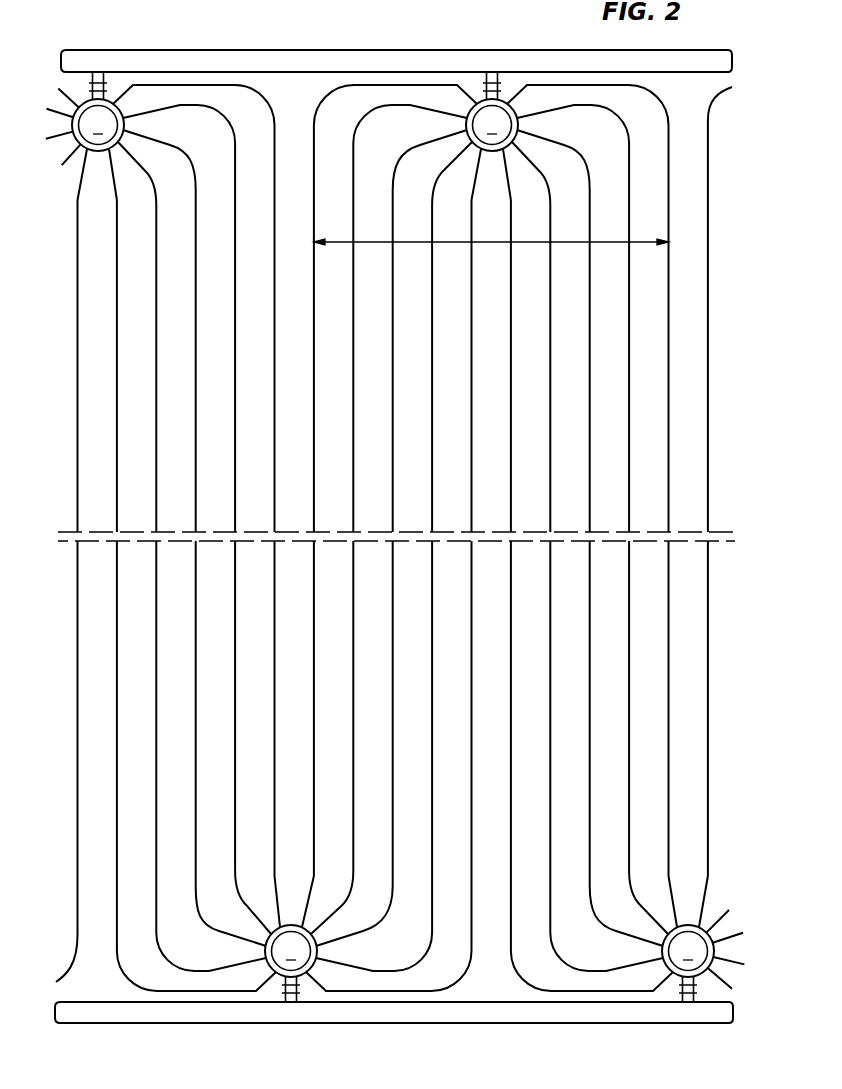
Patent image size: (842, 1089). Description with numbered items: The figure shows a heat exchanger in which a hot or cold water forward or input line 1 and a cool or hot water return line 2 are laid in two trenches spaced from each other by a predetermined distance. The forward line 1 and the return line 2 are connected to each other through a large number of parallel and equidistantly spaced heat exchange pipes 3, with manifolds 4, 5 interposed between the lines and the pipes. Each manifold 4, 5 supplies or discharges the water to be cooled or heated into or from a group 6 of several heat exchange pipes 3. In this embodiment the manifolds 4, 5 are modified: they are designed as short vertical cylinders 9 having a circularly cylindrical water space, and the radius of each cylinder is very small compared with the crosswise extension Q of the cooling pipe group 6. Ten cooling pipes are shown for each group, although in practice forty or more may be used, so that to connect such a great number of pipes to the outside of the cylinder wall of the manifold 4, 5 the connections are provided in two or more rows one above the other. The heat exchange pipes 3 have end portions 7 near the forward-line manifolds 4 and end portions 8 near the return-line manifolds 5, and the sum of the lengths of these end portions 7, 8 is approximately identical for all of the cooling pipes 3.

The forward line 1 is at (274, 61).
The return line 2 is at (444, 1012).
The heat exchange pipes 3 is at (312, 414).
The manifold 4 is at (282, 126).
The manifold 5 is at (504, 949).
The group of heat exchange pipes 6 is at (491, 232).
The end portions 7 is at (350, 178).
The end portions 8 is at (390, 856).
The short vertical cylinders 9 is at (108, 102).